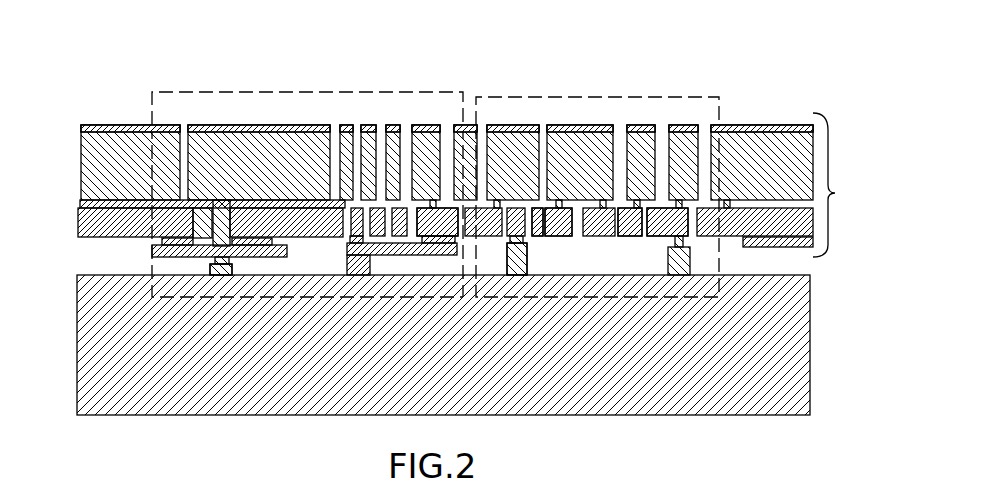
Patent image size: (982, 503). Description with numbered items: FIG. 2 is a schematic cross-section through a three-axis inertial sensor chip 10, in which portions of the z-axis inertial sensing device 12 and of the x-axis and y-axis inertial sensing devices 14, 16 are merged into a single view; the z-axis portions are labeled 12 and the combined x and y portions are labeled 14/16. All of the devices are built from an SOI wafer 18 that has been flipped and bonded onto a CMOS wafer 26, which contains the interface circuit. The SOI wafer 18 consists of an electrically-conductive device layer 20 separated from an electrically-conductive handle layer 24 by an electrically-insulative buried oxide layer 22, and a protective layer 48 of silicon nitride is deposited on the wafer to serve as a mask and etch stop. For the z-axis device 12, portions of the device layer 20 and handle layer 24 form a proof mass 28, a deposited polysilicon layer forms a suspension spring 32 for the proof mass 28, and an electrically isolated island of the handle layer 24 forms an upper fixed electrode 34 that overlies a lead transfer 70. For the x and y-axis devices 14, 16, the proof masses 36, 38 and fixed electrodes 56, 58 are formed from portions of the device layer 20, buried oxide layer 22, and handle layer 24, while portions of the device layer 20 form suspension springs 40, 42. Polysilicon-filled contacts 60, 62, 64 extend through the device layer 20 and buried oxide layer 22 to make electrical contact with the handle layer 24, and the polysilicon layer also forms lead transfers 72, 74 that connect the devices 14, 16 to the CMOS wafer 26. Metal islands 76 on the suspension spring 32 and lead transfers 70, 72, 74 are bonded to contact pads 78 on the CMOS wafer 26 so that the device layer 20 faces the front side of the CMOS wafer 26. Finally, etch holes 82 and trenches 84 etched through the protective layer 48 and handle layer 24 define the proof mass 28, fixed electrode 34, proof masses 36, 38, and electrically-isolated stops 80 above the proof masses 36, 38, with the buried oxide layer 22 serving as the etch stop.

The three-axis inertial sensor chip 10 is at (250, 62).
The z-axis inertial sensing device 12 is at (200, 92).
The x-axis inertial sensing device 14 is at (643, 166).
The y-axis inertial sensing device 16 is at (685, 97).
The SOI wafer 18 is at (844, 185).
The device layer 20 is at (125, 228).
The buried oxide layer 22 is at (118, 205).
The handle layer 24 is at (118, 125).
The CMOS wafer 26 is at (155, 382).
The proof mass 28 is at (446, 212).
The suspension spring 32 is at (384, 256).
The upper fixed electrode 34 is at (390, 125).
The proof mass 36 is at (566, 109).
The proof mass 38 is at (586, 125).
The suspension spring 40 is at (533, 236).
The suspension spring 42 is at (641, 236).
The protective layer 48 is at (96, 124).
The fixed electrode 56 is at (594, 272).
The fixed electrode 58 is at (575, 240).
The contact 60 is at (207, 233).
The contact 62 is at (512, 238).
The contact 64 is at (625, 232).
The lead transfer 70 is at (210, 260).
The lead transfer 72 is at (514, 256).
The lead transfer 74 is at (678, 250).
The metal islands 76 is at (207, 262).
The contact pads 78 is at (235, 268).
The stops 80 is at (690, 160).
The etch holes 82 is at (660, 125).
The trenches 84 is at (448, 125).